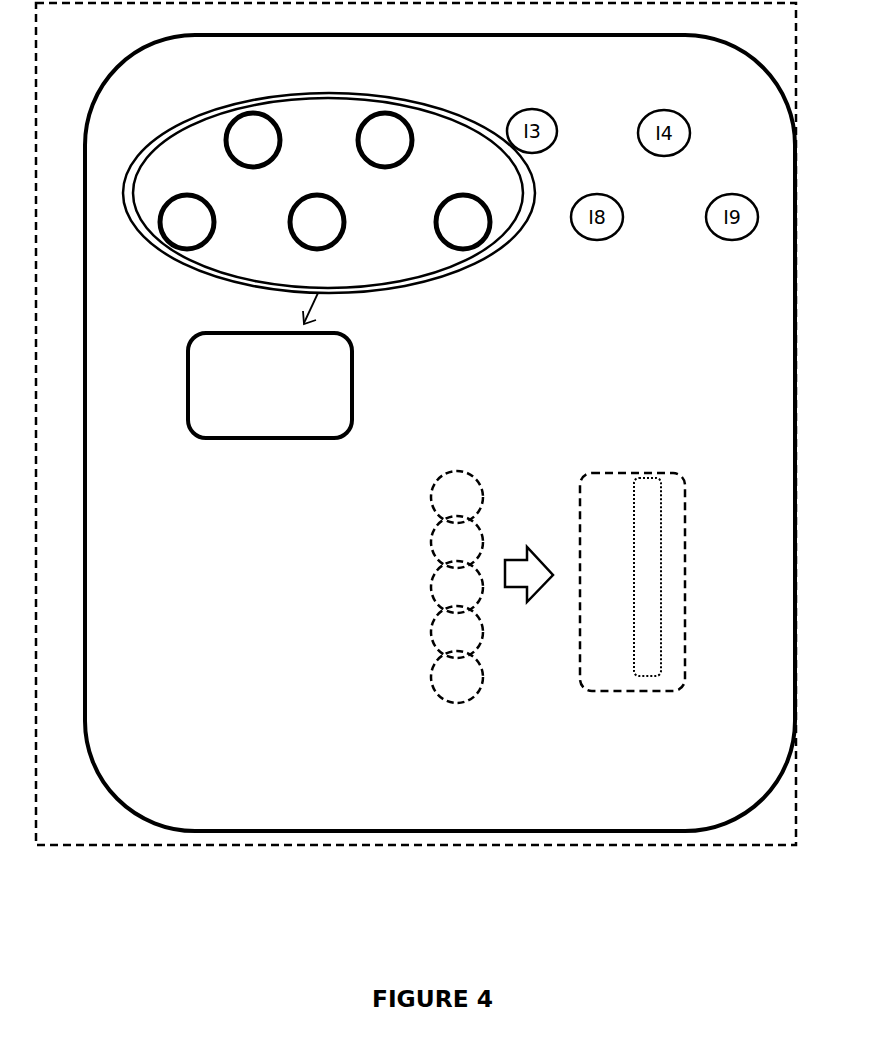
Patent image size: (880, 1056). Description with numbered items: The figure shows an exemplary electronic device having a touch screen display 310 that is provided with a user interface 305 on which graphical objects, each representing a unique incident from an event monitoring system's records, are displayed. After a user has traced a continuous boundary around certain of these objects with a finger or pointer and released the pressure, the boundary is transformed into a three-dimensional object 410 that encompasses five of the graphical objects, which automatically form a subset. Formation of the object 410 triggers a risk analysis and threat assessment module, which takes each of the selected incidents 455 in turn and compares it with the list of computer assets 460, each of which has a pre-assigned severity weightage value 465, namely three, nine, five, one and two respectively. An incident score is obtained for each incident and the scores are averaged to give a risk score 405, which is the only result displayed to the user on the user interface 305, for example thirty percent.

The user interface 305 is at (440, 433).
The touch screen display 310 is at (185, 845).
The risk score 405 is at (270, 385).
The three-dimensional object 410 is at (429, 113).
The list of selected items 455 is at (463, 462).
The computer assets 460 is at (608, 483).
The severity weightage values 465 is at (657, 475).